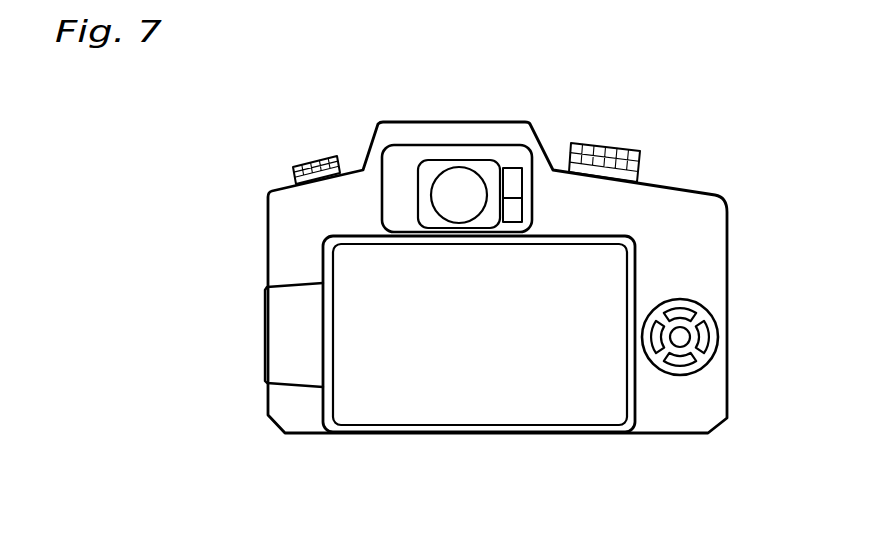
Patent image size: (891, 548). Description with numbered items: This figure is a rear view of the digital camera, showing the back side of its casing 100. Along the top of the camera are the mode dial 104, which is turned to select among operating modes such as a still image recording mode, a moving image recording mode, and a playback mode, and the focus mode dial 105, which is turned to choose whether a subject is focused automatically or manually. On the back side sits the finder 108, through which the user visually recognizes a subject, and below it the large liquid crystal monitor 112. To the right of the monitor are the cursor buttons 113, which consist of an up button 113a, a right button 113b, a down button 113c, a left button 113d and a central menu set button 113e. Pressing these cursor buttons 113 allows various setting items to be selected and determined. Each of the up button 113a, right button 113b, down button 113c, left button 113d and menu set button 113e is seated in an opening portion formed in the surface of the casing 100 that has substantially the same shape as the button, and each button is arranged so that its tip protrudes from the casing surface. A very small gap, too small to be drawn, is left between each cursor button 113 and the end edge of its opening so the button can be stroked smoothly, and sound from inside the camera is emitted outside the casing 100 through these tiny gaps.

The casing 100 is at (718, 425).
The mode dial 104 is at (622, 150).
The focus mode dial 105 is at (307, 163).
The finder 108 is at (383, 195).
The liquid crystal monitor 112 is at (332, 398).
The cursor buttons 113 is at (734, 341).
The up button 113a is at (682, 302).
The right button 113b is at (717, 335).
The down button 113c is at (697, 372).
The left button 113d is at (654, 355).
The menu set button 113e is at (692, 332).